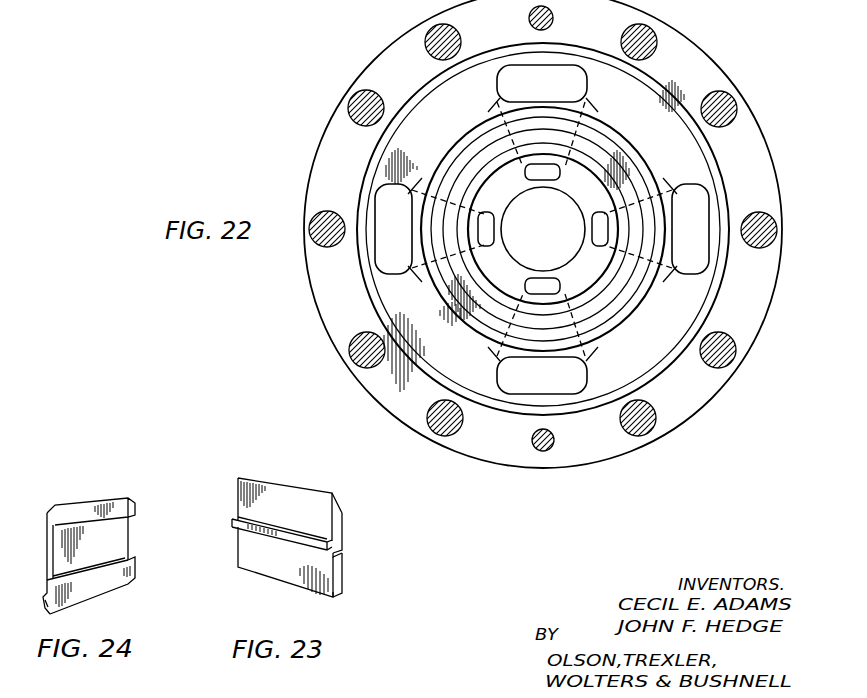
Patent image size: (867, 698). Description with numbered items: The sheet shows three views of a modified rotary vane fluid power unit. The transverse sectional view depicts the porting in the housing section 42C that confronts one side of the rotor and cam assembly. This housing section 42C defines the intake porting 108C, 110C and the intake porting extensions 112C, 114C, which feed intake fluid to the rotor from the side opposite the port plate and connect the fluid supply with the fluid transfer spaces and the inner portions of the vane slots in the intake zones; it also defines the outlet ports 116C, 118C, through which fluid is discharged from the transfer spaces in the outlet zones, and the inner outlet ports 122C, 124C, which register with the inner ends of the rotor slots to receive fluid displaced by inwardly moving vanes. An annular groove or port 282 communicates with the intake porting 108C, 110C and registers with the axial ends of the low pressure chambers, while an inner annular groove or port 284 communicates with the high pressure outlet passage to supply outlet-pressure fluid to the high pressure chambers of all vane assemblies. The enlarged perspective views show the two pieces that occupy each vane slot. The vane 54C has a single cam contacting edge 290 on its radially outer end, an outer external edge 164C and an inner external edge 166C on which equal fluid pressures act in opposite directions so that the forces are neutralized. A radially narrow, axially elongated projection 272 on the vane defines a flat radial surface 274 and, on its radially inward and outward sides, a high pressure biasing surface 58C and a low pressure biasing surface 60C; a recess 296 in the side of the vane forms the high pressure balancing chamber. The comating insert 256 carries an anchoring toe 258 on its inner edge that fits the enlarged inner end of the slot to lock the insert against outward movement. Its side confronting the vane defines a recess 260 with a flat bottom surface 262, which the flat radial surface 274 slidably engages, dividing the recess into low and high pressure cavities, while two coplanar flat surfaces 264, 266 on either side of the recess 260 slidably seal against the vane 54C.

In FIG. 22, the housing section 42C is at (688, 72).
In FIG. 22, the annular groove or port 282 is at (625, 142).
In FIG. 22, the annular groove or port 284 is at (477, 186).
In FIG. 22, the outlet port 118C is at (585, 88).
In FIG. 22, the outlet port 116C is at (585, 377).
In FIG. 22, the intake porting 110C is at (392, 273).
In FIG. 22, the intake porting 108C is at (687, 275).
In FIG. 22, the inner outlet port 124C is at (557, 176).
In FIG. 22, the inner outlet port 122C is at (556, 281).
In FIG. 22, the intake porting extension 114C is at (485, 246).
In FIG. 22, the intake porting extension 112C is at (596, 245).
In FIG. 24, the insert 256 is at (78, 498).
In FIG. 24, the flat surface 266 is at (125, 508).
In FIG. 24, the flat bottom surface 262 is at (117, 538).
In FIG. 24, the recess 260 is at (75, 576).
In FIG. 24, the anchoring toe 258 is at (45, 600).
In FIG. 24, the flat surface 264 is at (105, 582).
In FIG. 23, the cam contacting edge 290 is at (290, 486).
In FIG. 23, the outer external edge 164C is at (338, 503).
In FIG. 23, the vane 54C is at (340, 528).
In FIG. 23, the flat radial surface 274 is at (238, 526).
In FIG. 23, the low pressure biasing surface 60C is at (312, 538).
In FIG. 23, the projection 272 is at (338, 555).
In FIG. 23, the recess 296 is at (340, 566).
In FIG. 23, the high pressure biasing surface 58C is at (326, 577).
In FIG. 23, the inner external edge 166C is at (334, 598).